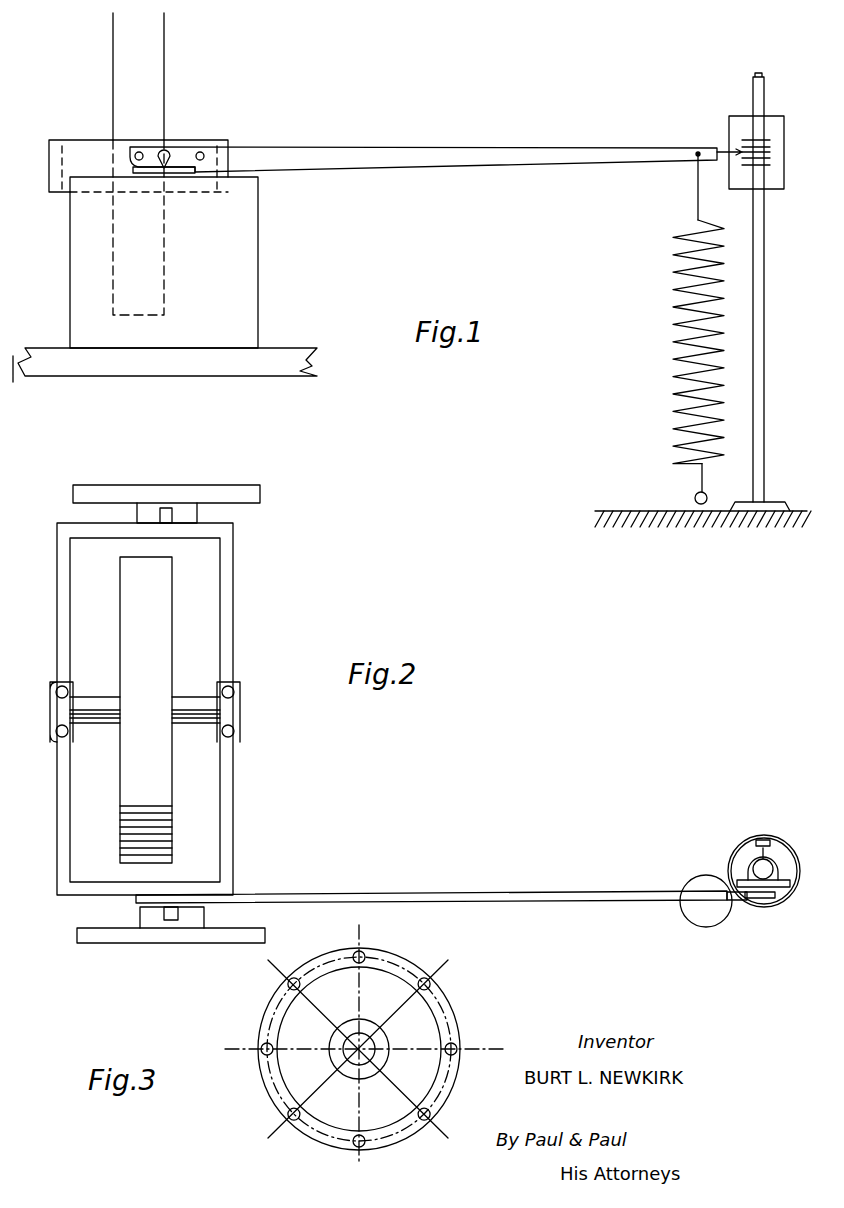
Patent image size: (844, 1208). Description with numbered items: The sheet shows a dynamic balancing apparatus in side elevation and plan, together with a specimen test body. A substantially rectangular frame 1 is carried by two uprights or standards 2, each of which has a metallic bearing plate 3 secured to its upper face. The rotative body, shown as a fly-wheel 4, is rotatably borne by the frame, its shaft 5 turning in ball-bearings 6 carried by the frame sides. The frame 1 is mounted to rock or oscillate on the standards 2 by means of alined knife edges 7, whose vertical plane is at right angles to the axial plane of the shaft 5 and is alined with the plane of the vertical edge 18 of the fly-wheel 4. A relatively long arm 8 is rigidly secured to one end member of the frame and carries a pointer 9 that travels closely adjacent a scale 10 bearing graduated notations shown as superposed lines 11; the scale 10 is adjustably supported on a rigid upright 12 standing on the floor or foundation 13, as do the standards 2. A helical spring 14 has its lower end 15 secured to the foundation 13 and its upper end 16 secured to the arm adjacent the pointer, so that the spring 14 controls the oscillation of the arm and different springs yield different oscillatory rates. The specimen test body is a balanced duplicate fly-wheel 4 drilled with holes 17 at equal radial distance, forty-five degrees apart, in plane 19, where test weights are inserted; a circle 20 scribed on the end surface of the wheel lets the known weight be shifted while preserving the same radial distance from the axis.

In FIG. 1, the frame 1 is at (88, 140).
In FIG. 2, the frame 1 is at (235, 642).
In FIG. 1, the uprights or standards 2 is at (240, 277).
In FIG. 2, the uprights or standards 2 is at (246, 484).
In FIG. 1, the bearing plate 3 is at (185, 174).
In FIG. 2, the bearing plate 3 is at (150, 490).
In FIG. 1, the fly-wheel 4 is at (150, 92).
In FIG. 2, the fly-wheel 4 is at (150, 672).
In FIG. 3, the fly-wheel 4 is at (420, 964).
In FIG. 2, the shaft 5 is at (92, 695).
In FIG. 2, the ball-bearings 6 is at (55, 725).
In FIG. 1, the knife edges 7 is at (168, 150).
In FIG. 2, the knife edges 7 is at (170, 507).
In FIG. 1, the arm 8 is at (378, 152).
In FIG. 2, the arm 8 is at (488, 892).
In FIG. 1, the pointer 9 is at (722, 148).
In FIG. 2, the pointer 9 is at (741, 902).
In FIG. 1, the scale 10 is at (773, 185).
In FIG. 2, the scale 10 is at (775, 892).
In FIG. 1, the superposed lines 11 is at (764, 140).
In FIG. 1, the upright 12 is at (766, 352).
In FIG. 2, the upright 12 is at (765, 860).
In FIG. 1, the foundation 13 is at (592, 520).
In FIG. 1, the helical spring 14 is at (672, 296).
In FIG. 2, the helical spring 14 is at (690, 885).
In FIG. 1, the lower end of spring 15 is at (696, 494).
In FIG. 1, the upper end of spring 16 is at (696, 178).
In FIG. 3, the holes 17 is at (364, 956).
In FIG. 1, the vertical edge 18 is at (165, 13).
In FIG. 2, the vertical edge 18 is at (172, 606).
In FIG. 1, the plane 19 is at (112, 13).
In FIG. 2, the plane 19 is at (118, 790).
In FIG. 3, the circle 20 is at (448, 1016).